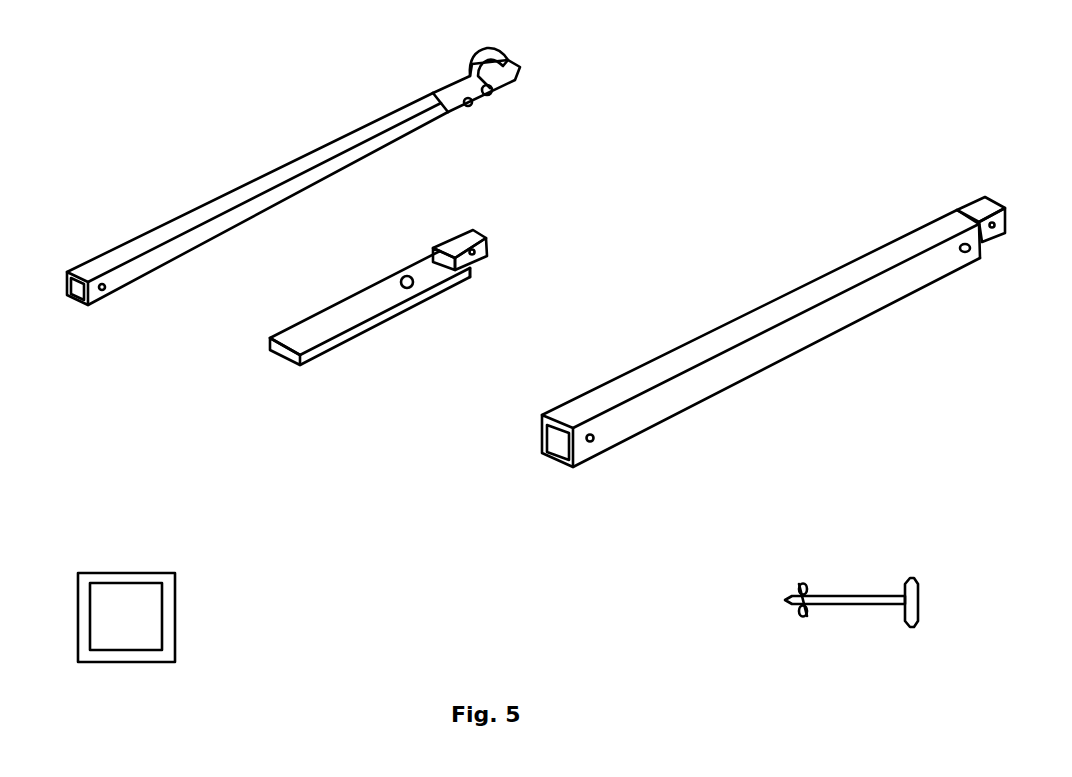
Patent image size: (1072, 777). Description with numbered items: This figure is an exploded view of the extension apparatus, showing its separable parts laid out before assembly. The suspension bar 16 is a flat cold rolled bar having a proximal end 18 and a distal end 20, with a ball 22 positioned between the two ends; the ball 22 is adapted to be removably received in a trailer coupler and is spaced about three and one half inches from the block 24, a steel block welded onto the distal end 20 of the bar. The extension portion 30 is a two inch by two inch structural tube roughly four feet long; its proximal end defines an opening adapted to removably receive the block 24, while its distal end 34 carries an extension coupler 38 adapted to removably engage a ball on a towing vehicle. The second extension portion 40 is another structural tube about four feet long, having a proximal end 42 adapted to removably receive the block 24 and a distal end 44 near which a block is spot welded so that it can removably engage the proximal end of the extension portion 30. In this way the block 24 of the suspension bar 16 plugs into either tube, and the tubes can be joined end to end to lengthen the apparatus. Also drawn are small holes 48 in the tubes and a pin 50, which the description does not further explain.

The suspension bar 16 is at (315, 355).
The proximal end 18 is at (278, 353).
The distal end 20 is at (468, 273).
The ball 22 is at (398, 278).
The block 24 is at (460, 243).
The extension portion 30 is at (308, 183).
The distal end 34 is at (452, 112).
The extension coupler 38 is at (468, 53).
The second extension portion 40 is at (782, 343).
The proximal end 42 is at (555, 413).
The distal end 44 is at (967, 257).
The pin hole 48 is at (593, 440).
The pin 50 is at (850, 595).